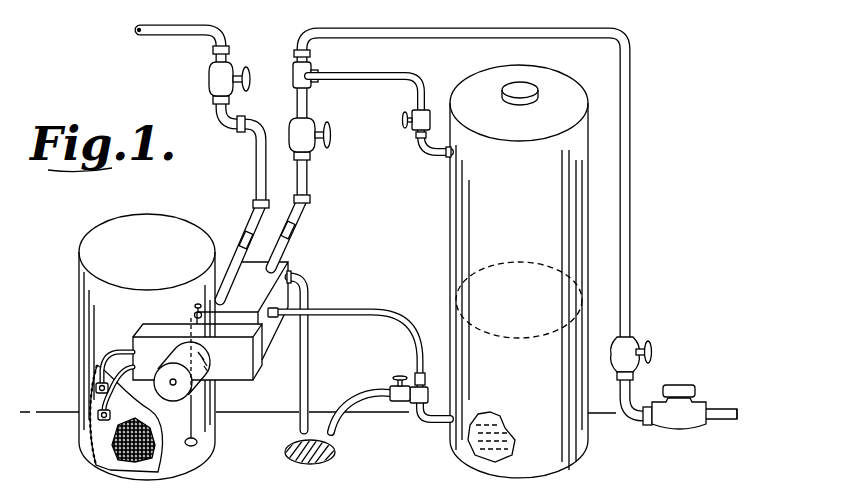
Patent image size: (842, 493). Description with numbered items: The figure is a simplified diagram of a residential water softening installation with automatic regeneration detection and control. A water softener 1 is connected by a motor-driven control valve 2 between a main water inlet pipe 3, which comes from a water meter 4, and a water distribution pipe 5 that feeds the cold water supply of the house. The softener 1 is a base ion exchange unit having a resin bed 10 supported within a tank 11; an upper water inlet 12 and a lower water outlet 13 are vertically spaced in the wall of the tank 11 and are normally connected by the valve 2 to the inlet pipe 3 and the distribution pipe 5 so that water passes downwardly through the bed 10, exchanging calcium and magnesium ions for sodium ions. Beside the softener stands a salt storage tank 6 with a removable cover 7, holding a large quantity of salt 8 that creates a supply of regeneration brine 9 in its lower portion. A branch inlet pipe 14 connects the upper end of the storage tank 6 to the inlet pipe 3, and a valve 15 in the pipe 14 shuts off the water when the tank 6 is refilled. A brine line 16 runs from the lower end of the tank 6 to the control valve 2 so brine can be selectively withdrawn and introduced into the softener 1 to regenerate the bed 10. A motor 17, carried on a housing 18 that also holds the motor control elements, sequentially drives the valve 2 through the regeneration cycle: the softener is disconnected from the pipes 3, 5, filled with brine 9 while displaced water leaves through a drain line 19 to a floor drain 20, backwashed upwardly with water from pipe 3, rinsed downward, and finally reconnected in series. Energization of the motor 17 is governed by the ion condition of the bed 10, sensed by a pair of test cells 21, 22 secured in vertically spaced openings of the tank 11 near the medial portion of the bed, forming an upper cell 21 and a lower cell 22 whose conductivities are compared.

The water softener 1 is at (157, 226).
The motor-driven control valve 2 is at (289, 264).
The main water inlet pipe 3 is at (630, 157).
The water meter 4 is at (680, 387).
The water distribution pipe 5 is at (162, 35).
The salt storage tank 6 is at (448, 229).
The removable cover 7 is at (560, 82).
The salt 8 is at (500, 178).
The regeneration brine 9 is at (462, 432).
The resin bed 10 is at (126, 455).
The tank 11 is at (98, 464).
The upper water inlet 12 is at (195, 307).
The lower water outlet 13 is at (188, 440).
The branch inlet pipe 14 is at (381, 74).
The valve 15 is at (412, 122).
The brine line 16 is at (377, 318).
The motor 17 is at (170, 386).
The housing 18 is at (237, 378).
The drain line 19 is at (309, 372).
The floor drain 20 is at (336, 456).
The upper test cell 21 is at (96, 395).
The lower test cell 22 is at (99, 431).